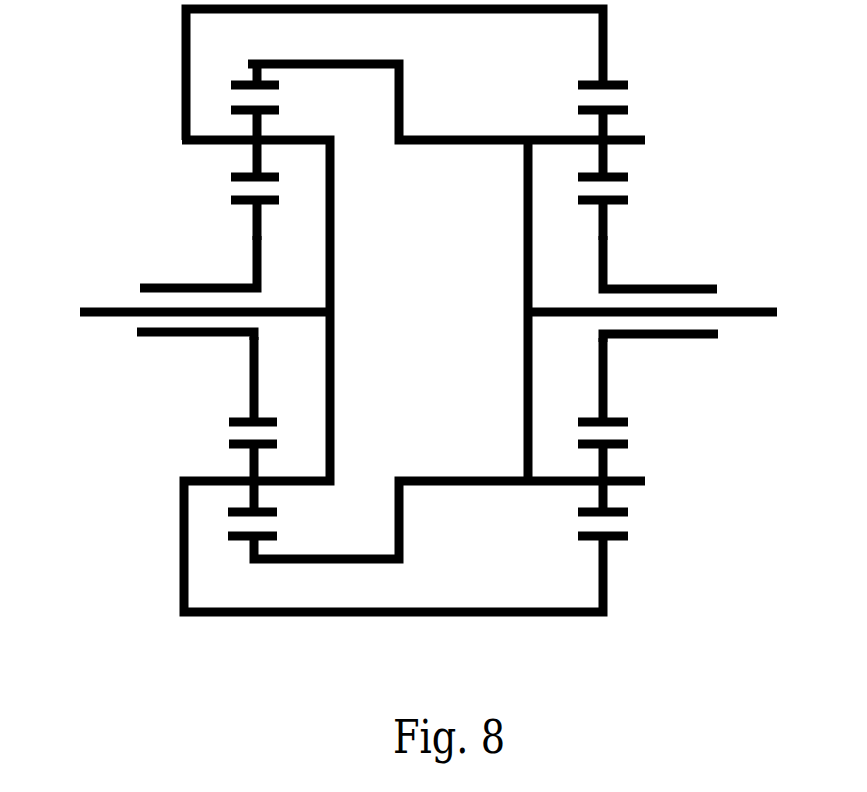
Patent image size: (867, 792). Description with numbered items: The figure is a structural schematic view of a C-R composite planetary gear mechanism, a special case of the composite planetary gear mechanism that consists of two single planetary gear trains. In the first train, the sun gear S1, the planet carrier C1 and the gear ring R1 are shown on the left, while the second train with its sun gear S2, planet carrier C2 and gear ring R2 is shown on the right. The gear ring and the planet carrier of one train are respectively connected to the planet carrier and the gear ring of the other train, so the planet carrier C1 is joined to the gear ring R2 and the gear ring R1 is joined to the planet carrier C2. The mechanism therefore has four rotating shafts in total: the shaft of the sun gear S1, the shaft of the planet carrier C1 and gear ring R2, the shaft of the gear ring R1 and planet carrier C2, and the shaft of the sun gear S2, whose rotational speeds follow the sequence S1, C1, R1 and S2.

The gear ring R1 is at (232, 74).
The planet carrier C1 is at (193, 171).
The sun gear S1 is at (205, 276).
The gear ring R2 is at (633, 67).
The planet carrier C2 is at (646, 175).
The sun gear S2 is at (652, 278).